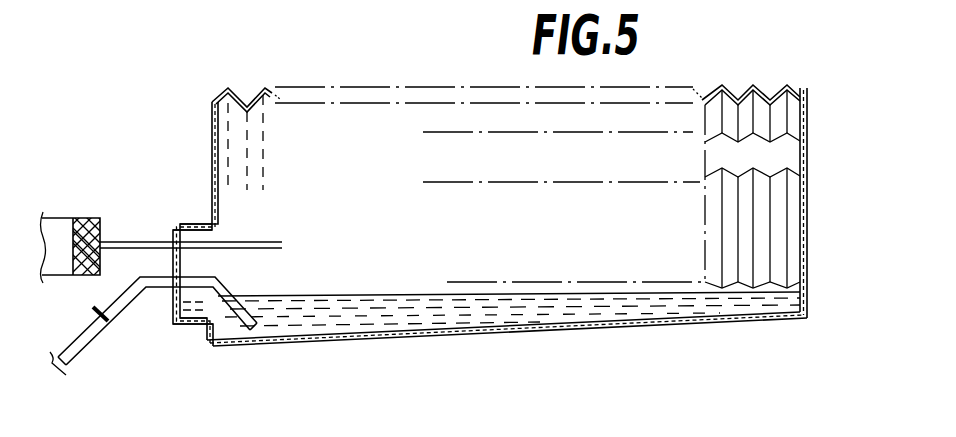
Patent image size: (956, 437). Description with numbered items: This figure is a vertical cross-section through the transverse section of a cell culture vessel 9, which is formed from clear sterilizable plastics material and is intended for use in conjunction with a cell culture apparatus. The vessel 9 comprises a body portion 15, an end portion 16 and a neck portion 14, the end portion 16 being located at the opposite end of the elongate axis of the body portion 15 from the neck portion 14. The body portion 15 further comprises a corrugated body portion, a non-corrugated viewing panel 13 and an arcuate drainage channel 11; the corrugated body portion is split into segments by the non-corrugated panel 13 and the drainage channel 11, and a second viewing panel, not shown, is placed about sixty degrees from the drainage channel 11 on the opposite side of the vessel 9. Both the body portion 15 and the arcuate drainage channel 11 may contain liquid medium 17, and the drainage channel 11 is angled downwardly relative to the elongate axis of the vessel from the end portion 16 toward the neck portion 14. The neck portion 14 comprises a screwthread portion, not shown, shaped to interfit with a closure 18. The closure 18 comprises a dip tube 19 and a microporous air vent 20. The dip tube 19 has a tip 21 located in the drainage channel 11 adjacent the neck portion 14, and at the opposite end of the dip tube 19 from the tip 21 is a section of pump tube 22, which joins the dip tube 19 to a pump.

The cell culture vessel 9 is at (506, 223).
The arcuate drainage channel 11 is at (322, 341).
The non-corrugated viewing panel 13 is at (775, 156).
The neck portion 14 is at (212, 337).
The body portion 15 is at (387, 150).
The end portion 16 is at (807, 298).
The liquid medium 17 is at (377, 313).
The closure 18 is at (195, 222).
The dip tube 19 is at (140, 291).
The microporous air vent 20 is at (118, 242).
The tip 21 is at (258, 328).
The pump tube 22 is at (80, 348).